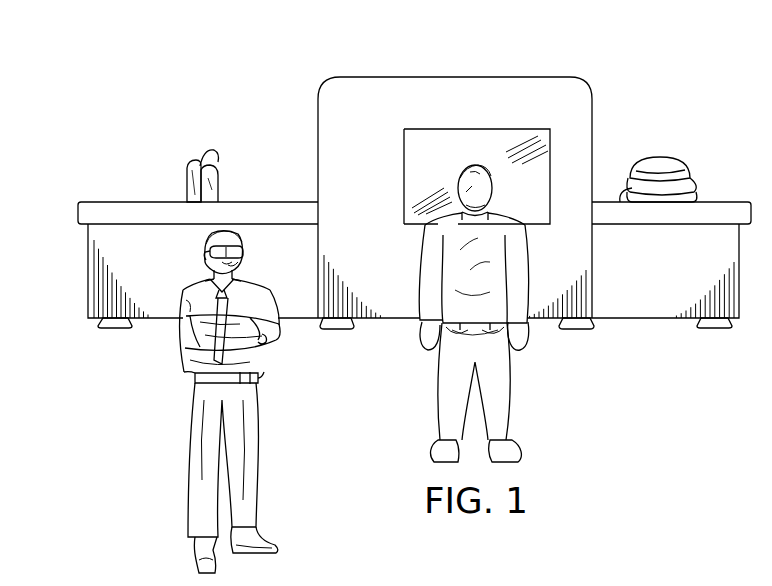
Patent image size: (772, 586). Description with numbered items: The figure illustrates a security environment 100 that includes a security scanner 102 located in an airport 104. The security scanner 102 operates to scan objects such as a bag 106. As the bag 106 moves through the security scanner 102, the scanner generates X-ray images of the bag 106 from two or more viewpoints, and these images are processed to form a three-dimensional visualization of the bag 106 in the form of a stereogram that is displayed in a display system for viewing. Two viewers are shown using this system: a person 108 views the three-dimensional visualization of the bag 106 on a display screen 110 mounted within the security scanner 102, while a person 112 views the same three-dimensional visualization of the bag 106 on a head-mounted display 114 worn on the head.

The security environment 100 is at (273, 83).
The security scanner 102 is at (501, 71).
The airport 104 is at (74, 72).
The bag 106 is at (187, 188).
The person 108 is at (507, 368).
The display screen 110 is at (403, 176).
The person 112 is at (195, 420).
The head-mounted display 114 is at (243, 253).